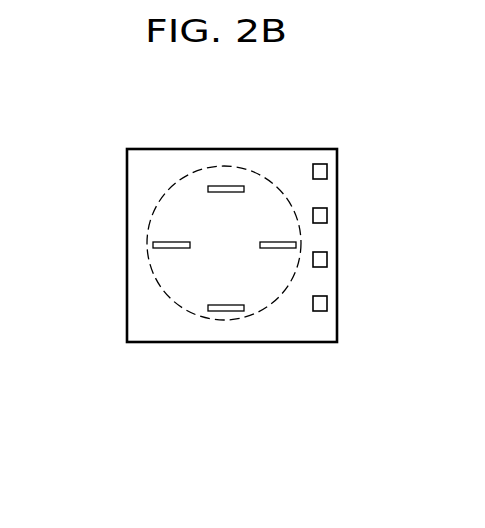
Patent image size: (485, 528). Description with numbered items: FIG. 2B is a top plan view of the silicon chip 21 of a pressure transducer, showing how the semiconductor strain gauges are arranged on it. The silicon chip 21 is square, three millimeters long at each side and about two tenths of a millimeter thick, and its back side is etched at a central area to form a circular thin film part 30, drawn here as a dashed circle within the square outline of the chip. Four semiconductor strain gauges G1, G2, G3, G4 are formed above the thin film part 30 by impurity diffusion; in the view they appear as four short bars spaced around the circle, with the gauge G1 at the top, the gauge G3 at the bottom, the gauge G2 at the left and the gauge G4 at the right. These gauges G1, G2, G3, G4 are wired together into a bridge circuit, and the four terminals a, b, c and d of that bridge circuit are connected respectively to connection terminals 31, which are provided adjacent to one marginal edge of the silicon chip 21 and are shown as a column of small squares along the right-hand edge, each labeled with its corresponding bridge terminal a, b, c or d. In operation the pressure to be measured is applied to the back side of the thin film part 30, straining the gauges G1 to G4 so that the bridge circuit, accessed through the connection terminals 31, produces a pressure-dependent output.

The silicon chip 21 is at (168, 149).
The thin film part 30 is at (163, 205).
The connection terminals 31 is at (321, 165).
The semiconductor strain gauge G1 is at (232, 186).
The semiconductor strain gauge G2 is at (178, 248).
The semiconductor strain gauge G3 is at (229, 311).
The semiconductor strain gauge G4 is at (278, 249).
The terminal of the bridge circuit a is at (328, 172).
The terminal of the bridge circuit b is at (328, 216).
The terminal of the bridge circuit c is at (328, 260).
The terminal of the bridge circuit d is at (328, 304).